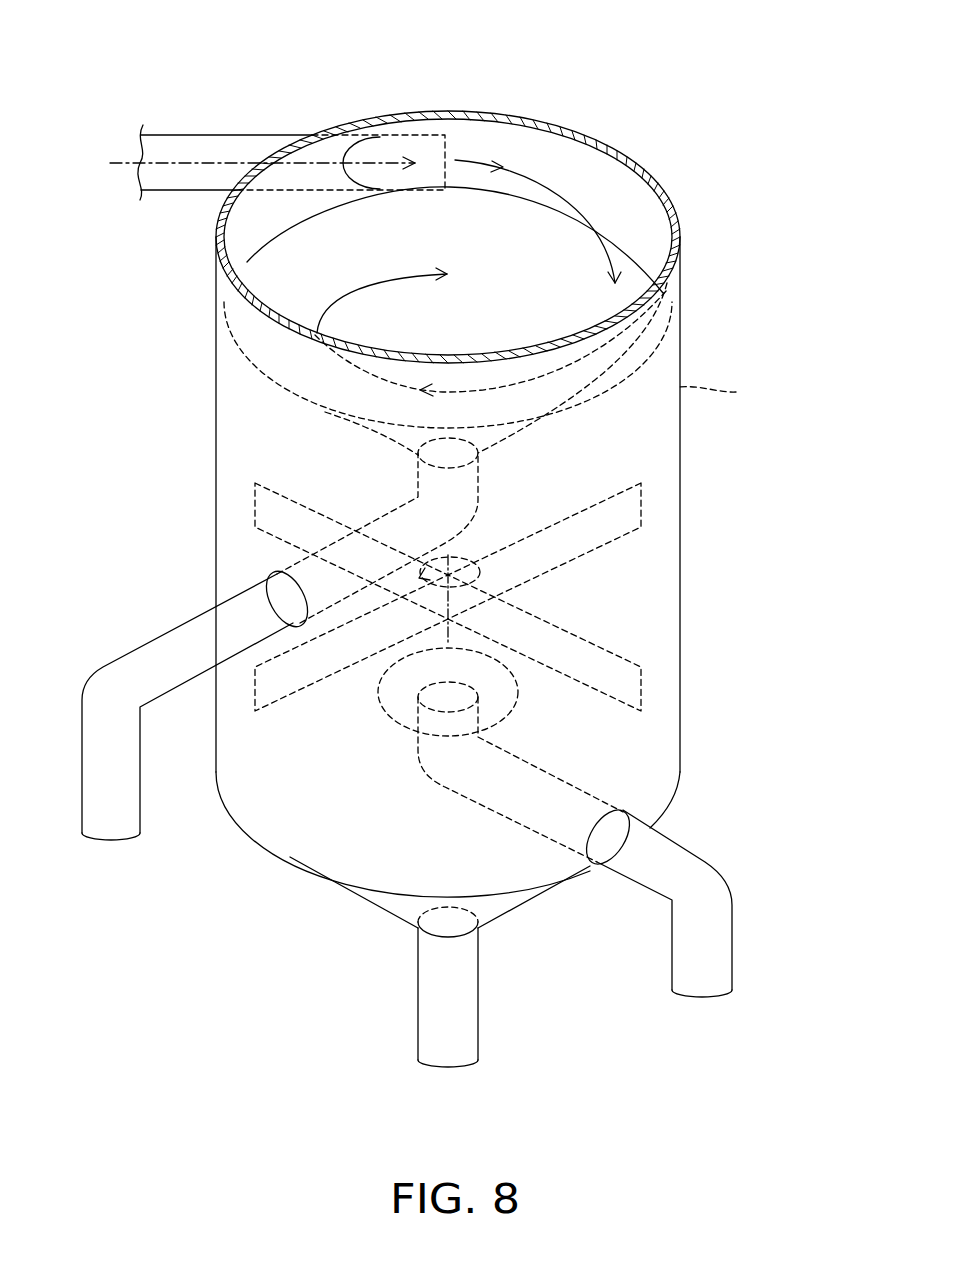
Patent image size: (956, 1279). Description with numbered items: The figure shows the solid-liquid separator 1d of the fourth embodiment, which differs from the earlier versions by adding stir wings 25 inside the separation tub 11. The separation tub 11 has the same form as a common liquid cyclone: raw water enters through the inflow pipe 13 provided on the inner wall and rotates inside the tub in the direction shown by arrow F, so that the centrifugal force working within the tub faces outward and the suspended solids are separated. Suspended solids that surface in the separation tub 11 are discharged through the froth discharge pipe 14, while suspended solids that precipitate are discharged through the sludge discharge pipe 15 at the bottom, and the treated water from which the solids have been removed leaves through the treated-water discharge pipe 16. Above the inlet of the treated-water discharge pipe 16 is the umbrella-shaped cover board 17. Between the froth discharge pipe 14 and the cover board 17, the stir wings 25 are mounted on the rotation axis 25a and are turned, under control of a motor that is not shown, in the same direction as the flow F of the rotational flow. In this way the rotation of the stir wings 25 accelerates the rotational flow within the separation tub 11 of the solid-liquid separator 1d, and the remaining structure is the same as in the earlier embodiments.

The solid-liquid separator 1d is at (645, 90).
The separation tub 11 is at (683, 198).
The inflow pipe 13 is at (218, 135).
The froth discharge pipe 14 is at (143, 647).
The sludge discharge pipe 15 is at (418, 982).
The treated-water discharge pipe 16 is at (733, 930).
The cover board 17 is at (517, 695).
The stir wings 25 is at (570, 540).
The rotation axis 25a is at (450, 552).
The flow F is at (560, 187).